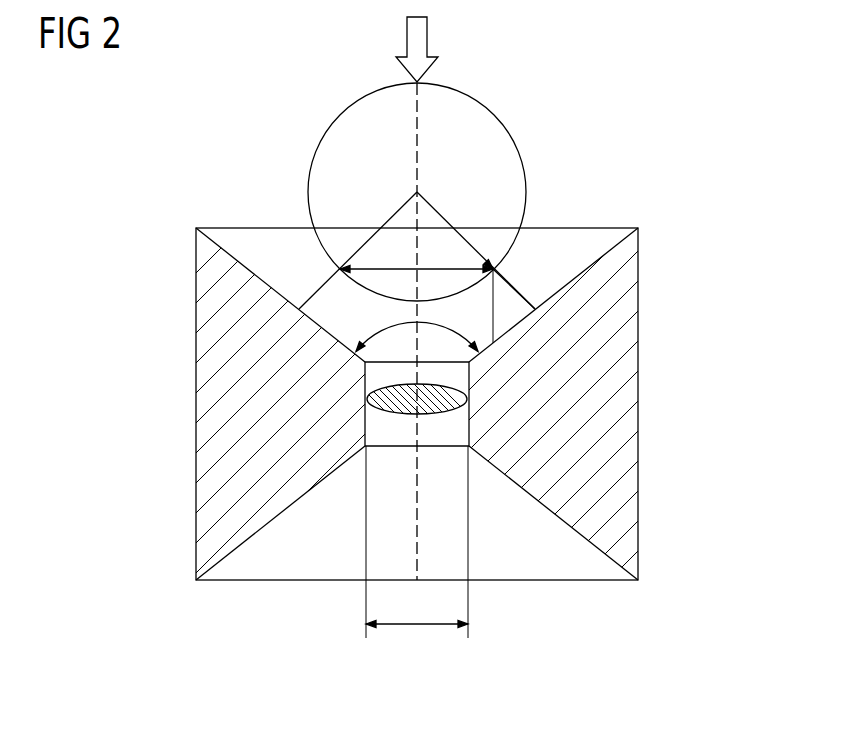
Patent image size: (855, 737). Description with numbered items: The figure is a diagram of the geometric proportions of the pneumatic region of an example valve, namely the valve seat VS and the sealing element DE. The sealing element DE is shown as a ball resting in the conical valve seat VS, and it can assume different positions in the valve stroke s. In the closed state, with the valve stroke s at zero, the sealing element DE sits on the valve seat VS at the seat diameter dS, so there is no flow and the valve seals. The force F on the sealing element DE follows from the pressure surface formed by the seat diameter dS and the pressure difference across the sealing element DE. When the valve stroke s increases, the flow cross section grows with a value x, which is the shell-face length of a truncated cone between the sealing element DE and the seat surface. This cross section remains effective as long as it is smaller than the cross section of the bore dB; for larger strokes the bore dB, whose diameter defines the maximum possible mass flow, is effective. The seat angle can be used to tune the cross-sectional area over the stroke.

The sealing element DE is at (517, 140).
The valve seat VS is at (638, 333).
The force F is at (428, 49).
The sphere radius R is at (417, 250).
The seat diameter dS is at (416, 256).
The valve stroke s is at (484, 306).
The surface length of truncated cone x is at (514, 283).
The bore diameter dB is at (417, 542).